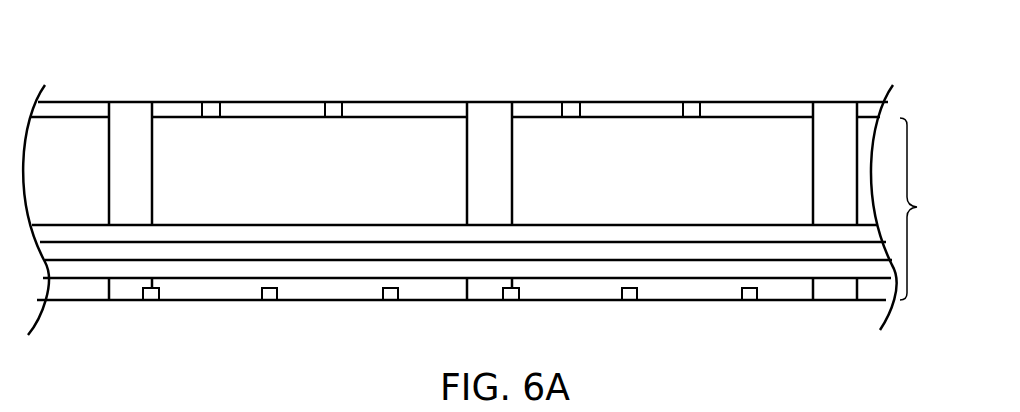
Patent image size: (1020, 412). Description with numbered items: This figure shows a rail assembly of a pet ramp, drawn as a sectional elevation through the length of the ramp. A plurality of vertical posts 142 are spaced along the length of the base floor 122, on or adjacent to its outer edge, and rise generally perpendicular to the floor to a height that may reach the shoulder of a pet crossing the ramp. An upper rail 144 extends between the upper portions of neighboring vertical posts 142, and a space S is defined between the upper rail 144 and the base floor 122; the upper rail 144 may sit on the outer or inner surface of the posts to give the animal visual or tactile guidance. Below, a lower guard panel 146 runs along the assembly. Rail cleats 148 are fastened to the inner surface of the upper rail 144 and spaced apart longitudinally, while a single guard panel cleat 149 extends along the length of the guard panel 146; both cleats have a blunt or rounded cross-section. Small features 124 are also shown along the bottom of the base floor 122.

The base floor 122 is at (82, 300).
The bottom contact pads 124 is at (520, 300).
The vertical posts 142 is at (130, 185).
The upper rail 144 is at (437, 107).
The lower guard panel 146 is at (307, 270).
The rail cleats 148 is at (210, 102).
The guard panel cleat 149 is at (443, 252).
The space S is at (917, 209).